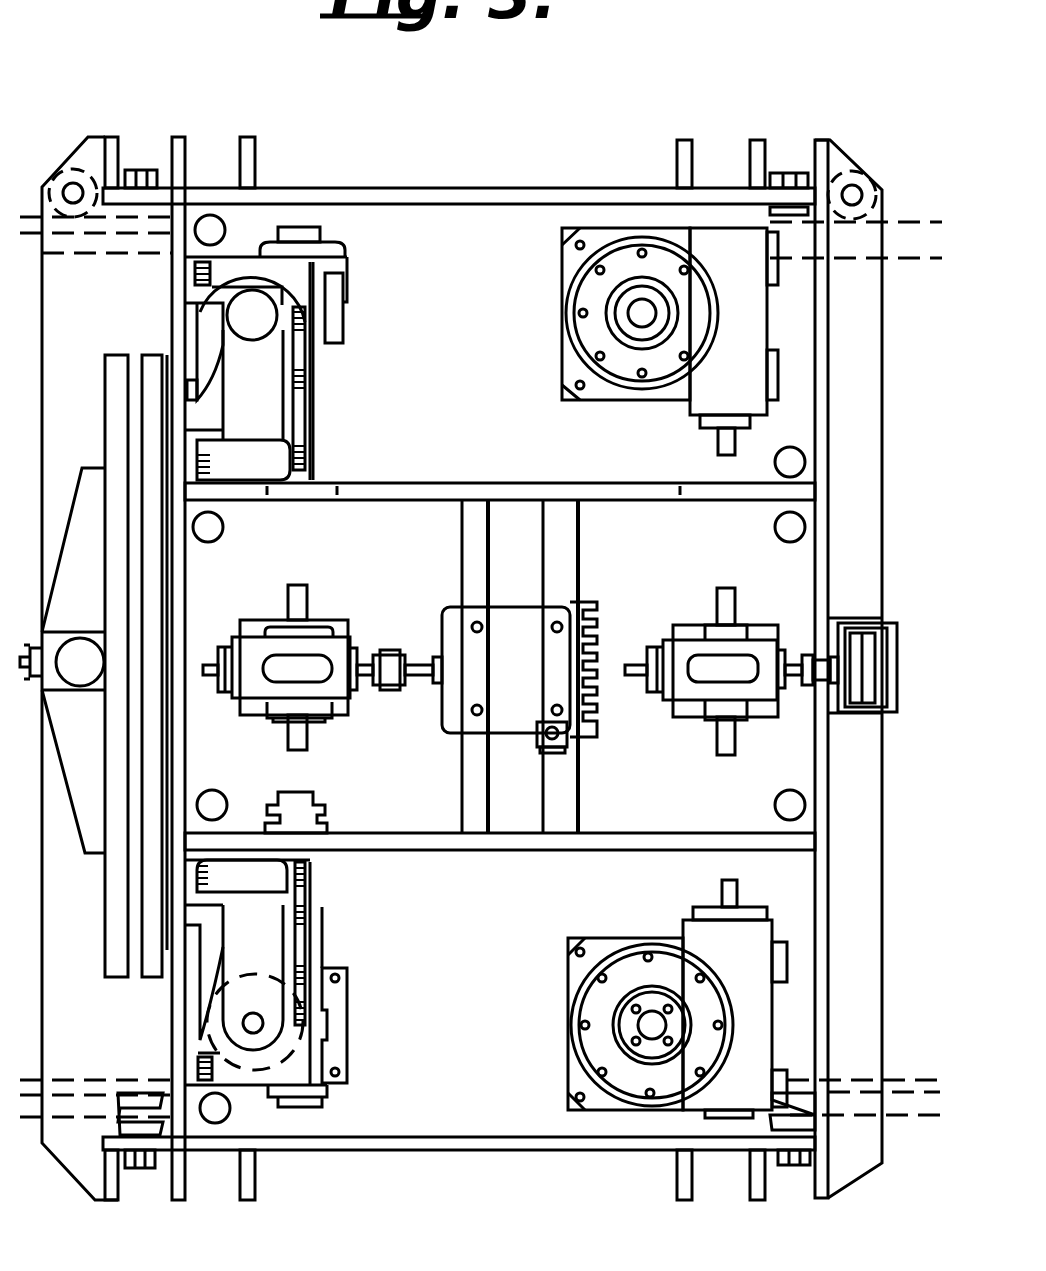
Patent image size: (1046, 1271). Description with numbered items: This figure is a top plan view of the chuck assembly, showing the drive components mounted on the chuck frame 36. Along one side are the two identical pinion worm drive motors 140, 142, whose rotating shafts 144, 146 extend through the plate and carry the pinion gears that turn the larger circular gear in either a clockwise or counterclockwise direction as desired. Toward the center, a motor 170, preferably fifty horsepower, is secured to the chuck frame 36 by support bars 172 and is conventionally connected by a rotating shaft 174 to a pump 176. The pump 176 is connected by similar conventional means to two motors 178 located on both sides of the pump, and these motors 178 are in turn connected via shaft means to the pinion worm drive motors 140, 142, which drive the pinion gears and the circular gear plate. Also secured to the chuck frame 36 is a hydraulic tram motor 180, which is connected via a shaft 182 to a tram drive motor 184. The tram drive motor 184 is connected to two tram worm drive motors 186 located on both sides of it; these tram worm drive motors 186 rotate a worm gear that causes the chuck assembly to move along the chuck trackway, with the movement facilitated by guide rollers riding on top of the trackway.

The chuck frame 36 is at (482, 1140).
The pinion worm drive motor 140 is at (267, 405).
The pinion worm drive motor 142 is at (268, 905).
The rotating shaft 144 is at (192, 385).
The rotating shaft 146 is at (167, 947).
The motor 170 is at (540, 679).
The support bars 172 is at (560, 803).
The rotating shaft 174 is at (390, 688).
The pump 176 is at (343, 648).
The motors 178 is at (313, 806).
The hydraulic tram motor 180 is at (870, 640).
The shaft 182 is at (807, 653).
The tram drive motor 184 is at (707, 667).
The tram worm drive motors 186 is at (585, 298).